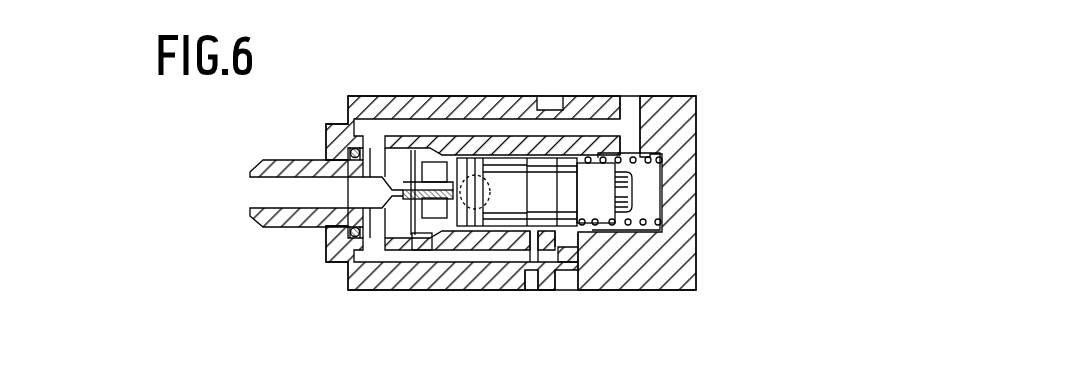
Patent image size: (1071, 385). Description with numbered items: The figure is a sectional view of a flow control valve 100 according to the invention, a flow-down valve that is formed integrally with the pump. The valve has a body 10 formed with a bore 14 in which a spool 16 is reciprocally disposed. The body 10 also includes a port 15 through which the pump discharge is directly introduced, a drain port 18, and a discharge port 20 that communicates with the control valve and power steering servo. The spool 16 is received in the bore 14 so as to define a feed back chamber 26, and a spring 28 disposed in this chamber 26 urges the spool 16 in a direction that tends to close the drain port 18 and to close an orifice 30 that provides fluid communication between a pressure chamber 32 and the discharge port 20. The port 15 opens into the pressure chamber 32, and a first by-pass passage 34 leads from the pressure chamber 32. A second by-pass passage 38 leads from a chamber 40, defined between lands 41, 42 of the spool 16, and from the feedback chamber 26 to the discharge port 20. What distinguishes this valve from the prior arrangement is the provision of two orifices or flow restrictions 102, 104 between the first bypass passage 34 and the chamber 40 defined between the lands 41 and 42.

The flow control valve 100 is at (370, 82).
The body 10 is at (698, 274).
The bore 14 is at (640, 228).
The port 15 is at (437, 168).
The spool 16 is at (588, 228).
The drain port 18 is at (479, 118).
The discharge port 20 is at (252, 191).
The feed back chamber 26 is at (653, 202).
The spring 28 is at (647, 161).
The orifice 30 is at (392, 245).
The pressure chamber 32 is at (420, 230).
The first by-pass passage 34 is at (480, 252).
The second by-pass passage 38 is at (521, 135).
The chamber 40 is at (540, 135).
The land 41 is at (604, 193).
The land 42 is at (517, 192).
The orifice 102 is at (533, 243).
The orifice 104 is at (553, 243).